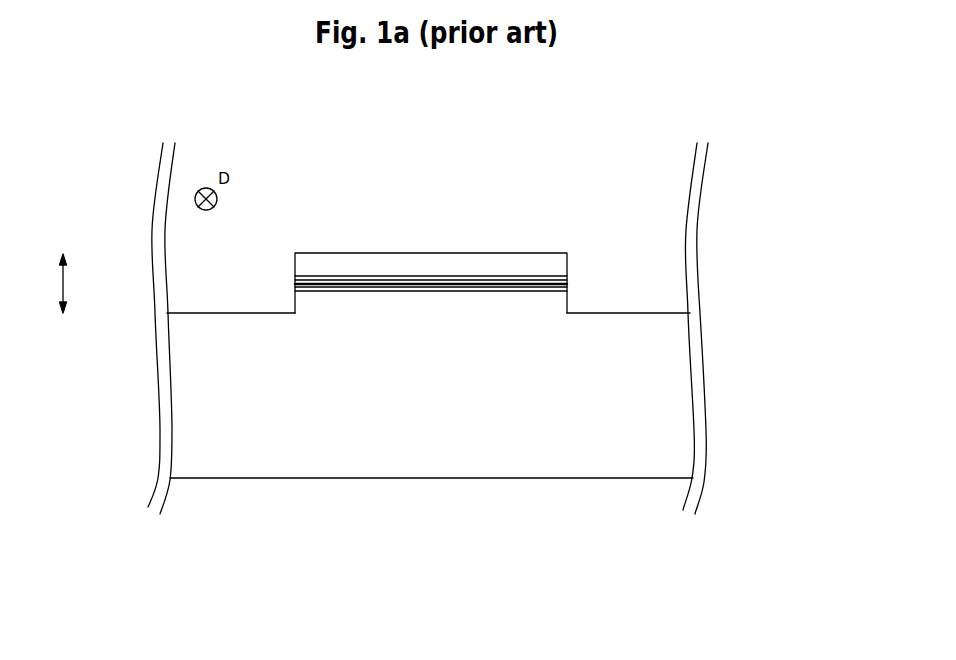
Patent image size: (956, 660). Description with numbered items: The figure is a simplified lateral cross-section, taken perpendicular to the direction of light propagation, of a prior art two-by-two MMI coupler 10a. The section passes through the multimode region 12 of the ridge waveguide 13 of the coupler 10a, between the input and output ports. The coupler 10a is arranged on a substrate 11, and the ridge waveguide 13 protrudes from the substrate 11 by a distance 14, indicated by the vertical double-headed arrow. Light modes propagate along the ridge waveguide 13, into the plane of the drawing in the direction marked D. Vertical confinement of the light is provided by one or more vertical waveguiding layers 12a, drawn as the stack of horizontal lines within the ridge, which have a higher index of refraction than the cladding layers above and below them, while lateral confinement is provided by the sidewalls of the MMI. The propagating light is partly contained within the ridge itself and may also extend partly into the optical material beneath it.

The MMI coupler 10a is at (492, 555).
The substrate 11 is at (573, 408).
The multimode region 12 is at (454, 267).
The vertical waveguiding layers 12a is at (380, 275).
The ridge waveguide 13 is at (569, 263).
The distance 14 is at (64, 297).